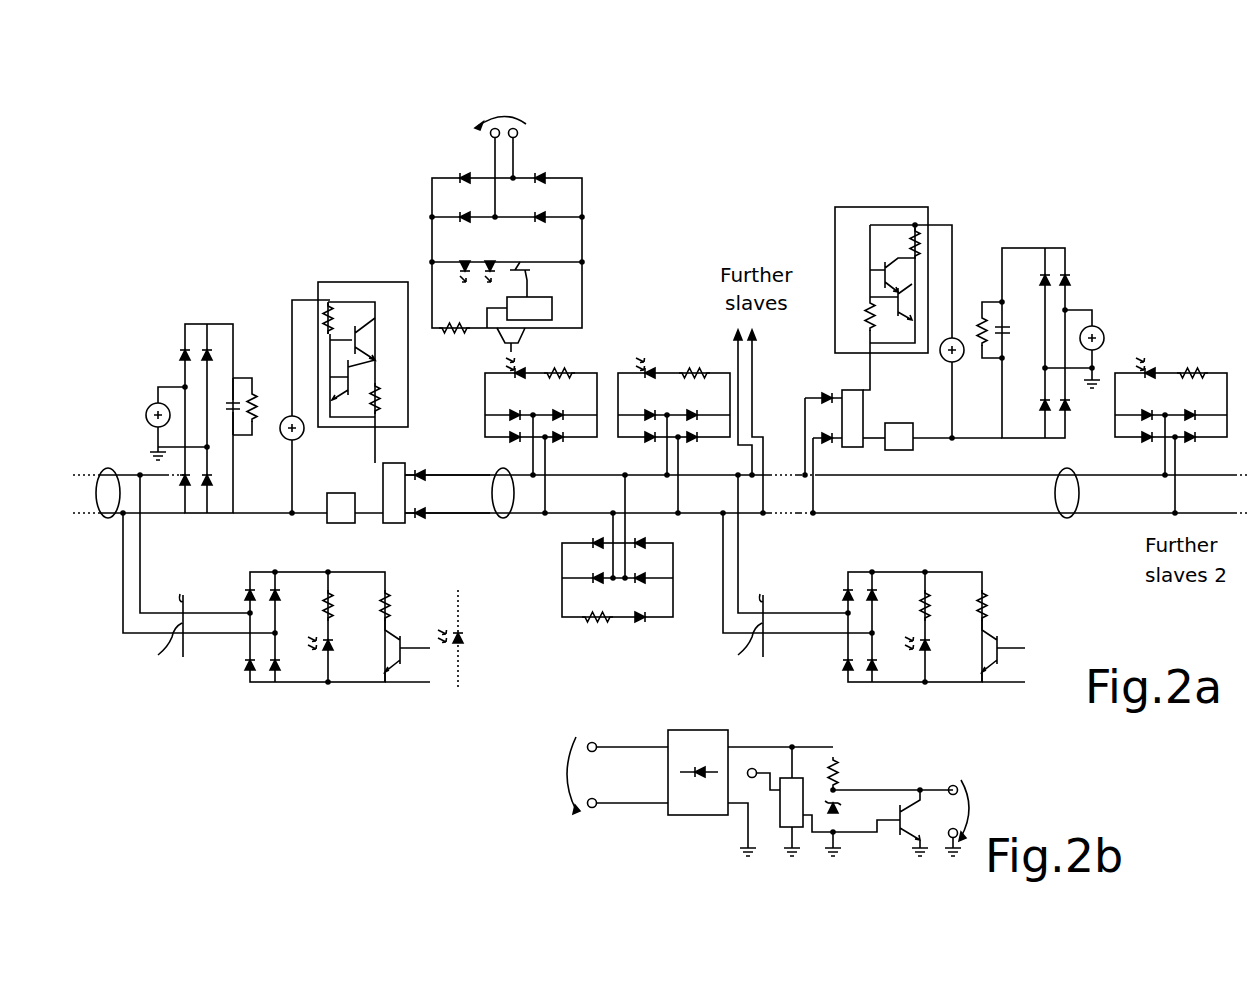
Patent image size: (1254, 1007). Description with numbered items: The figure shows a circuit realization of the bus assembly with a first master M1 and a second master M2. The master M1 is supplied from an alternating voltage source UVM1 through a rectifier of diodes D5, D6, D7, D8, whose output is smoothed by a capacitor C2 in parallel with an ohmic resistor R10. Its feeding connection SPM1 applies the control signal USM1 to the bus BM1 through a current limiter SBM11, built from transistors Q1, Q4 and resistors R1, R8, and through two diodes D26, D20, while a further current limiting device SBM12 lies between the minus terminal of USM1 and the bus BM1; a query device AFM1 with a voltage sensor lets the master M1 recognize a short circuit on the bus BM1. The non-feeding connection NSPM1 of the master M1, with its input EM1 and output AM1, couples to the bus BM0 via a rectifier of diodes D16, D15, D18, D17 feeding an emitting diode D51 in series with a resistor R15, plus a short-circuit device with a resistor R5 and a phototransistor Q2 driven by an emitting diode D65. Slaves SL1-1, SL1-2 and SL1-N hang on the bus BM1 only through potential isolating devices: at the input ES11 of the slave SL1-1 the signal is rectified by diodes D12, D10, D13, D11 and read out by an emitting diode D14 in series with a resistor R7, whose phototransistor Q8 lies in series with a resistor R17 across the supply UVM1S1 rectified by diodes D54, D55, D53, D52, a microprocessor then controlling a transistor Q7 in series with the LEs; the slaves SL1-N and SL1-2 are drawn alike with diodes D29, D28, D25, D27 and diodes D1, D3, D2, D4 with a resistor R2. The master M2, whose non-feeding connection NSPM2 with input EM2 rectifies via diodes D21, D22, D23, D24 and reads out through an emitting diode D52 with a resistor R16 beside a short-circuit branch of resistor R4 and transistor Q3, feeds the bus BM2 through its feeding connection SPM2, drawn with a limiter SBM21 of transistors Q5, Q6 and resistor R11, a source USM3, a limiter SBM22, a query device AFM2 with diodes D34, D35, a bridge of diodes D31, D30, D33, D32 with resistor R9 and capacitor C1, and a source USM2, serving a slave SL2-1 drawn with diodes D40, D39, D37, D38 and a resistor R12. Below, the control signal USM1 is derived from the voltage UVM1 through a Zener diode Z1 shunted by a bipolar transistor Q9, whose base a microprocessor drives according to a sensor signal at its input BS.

In FIG. 2A, the first master M1 is at (234, 381).
In FIG. 2A, the second master M2 is at (989, 319).
In FIG. 2A, the diode D5 is at (176, 350).
In FIG. 2A, the diode D6 is at (215, 350).
In FIG. 2A, the diode D7 is at (176, 484).
In FIG. 2A, the diode D8 is at (215, 484).
In FIG. 2A, the alternating voltage source UVM1 is at (152, 422).
In FIG. 2B, the alternating voltage source UVM1 is at (585, 775).
In FIG. 2A, the capacitor C2 is at (226, 406).
In FIG. 2A, the ohmic resistor R10 is at (258, 406).
In FIG. 2A, the control signal USM1 is at (285, 407).
In FIG. 2B, the control signal USM1 is at (983, 818).
In FIG. 2A, the current limiter SBM11 is at (362, 282).
In FIG. 2A, the ohmic resistor R1 is at (339, 318).
In FIG. 2A, the transistor Q1 is at (368, 339).
In FIG. 2A, the transistor Q4 is at (347, 380).
In FIG. 2A, the ohmic resistor R8 is at (382, 398).
In FIG. 2B, the ohmic resistor R8 is at (889, 806).
In FIG. 2A, the current limiting device SBM12 is at (336, 493).
In FIG. 2A, the query device AFM1 is at (392, 523).
In FIG. 2A, the diode D26 is at (421, 465).
In FIG. 2A, the diode D20 is at (421, 523).
In FIG. 2A, the feeding connection SPM1 is at (447, 494).
In FIG. 2A, the feeding connection SPM2 is at (777, 462).
In FIG. 2A, the bus BM0 is at (108, 518).
In FIG. 2A, the bus BM1 is at (503, 518).
In FIG. 2A, the bus BM2 is at (1067, 518).
In FIG. 2A, the input ES11 is at (535, 338).
In FIG. 2A, the voltage source UVM1S1 is at (492, 155).
In FIG. 2A, the diode D54 is at (463, 170).
In FIG. 2A, the diode D55 is at (540, 170).
In FIG. 2A, the diode D53 is at (463, 209).
In FIG. 2A, the diode D52 is at (741, 433).
In FIG. 2A, the transistor Q7 is at (532, 279).
In FIG. 2A, the ohmic resistor R17 is at (454, 321).
In FIG. 2A, the phototransistor Q8 is at (497, 340).
In FIG. 2A, the slave SL1-1 is at (507, 434).
In FIG. 2A, the emitting diode D14 is at (501, 367).
In FIG. 2A, the resistor R7 is at (559, 366).
In FIG. 2A, the diode D12 is at (514, 407).
In FIG. 2A, the diode D10 is at (557, 407).
In FIG. 2A, the diode D13 is at (574, 527).
In FIG. 2A, the diode D11 is at (559, 448).
In FIG. 2A, the slave SL1-N is at (674, 422).
In FIG. 2A, the diode D29 is at (657, 410).
In FIG. 2A, the diode D28 is at (649, 407).
In FIG. 2A, the diode D25 is at (692, 407).
In FIG. 2A, the diode D27 is at (644, 448).
In FIG. 2A, the slave SL1-2 is at (617, 566).
In FIG. 2A, the diode D1 is at (595, 537).
In FIG. 2A, the diode D3 is at (640, 537).
In FIG. 2A, the diode D2 is at (596, 570).
In FIG. 2A, the diode D4 is at (640, 570).
In FIG. 2A, the resistor R2 is at (597, 610).
In FIG. 2A, the non-feeding connection NSPM1 is at (187, 573).
In FIG. 2A, the non-feeding connection NSPM2 is at (778, 573).
In FIG. 2A, the input EM1 is at (321, 708).
In FIG. 2A, the output AM1 is at (443, 708).
In FIG. 2A, the diode D16 is at (231, 598).
In FIG. 2A, the diode D15 is at (288, 598).
In FIG. 2A, the diode D18 is at (231, 668).
In FIG. 2A, the diode D17 is at (288, 668).
In FIG. 2A, the resistor R15 is at (341, 605).
In FIG. 2A, the emitting diode D51 is at (333, 654).
In FIG. 2A, the resistor R5 is at (627, 460).
In FIG. 2A, the phototransistor Q2 is at (401, 651).
In FIG. 2A, the emitting diode D65 is at (465, 638).
In FIG. 2A, the input EM2 is at (915, 627).
In FIG. 2A, the diode D21 is at (829, 598).
In FIG. 2A, the diode D22 is at (886, 598).
In FIG. 2A, the diode D23 is at (829, 668).
In FIG. 2A, the diode D24 is at (886, 668).
In FIG. 2A, the resistor R16 is at (938, 605).
In FIG. 2A, the ohmic resistor R4 is at (991, 605).
In FIG. 2A, the transistor Q3 is at (996, 651).
In FIG. 2A, the master signal block SBM21 is at (887, 207).
In FIG. 2A, the resistor R11 is at (898, 243).
In FIG. 2A, the transistor Q5 is at (883, 275).
In FIG. 2A, the transistor Q6 is at (907, 302).
In FIG. 2A, the signal voltage source USM3 is at (930, 331).
In FIG. 2A, the master signal block SBM22 is at (891, 427).
In FIG. 2A, the master filter AFM2 is at (845, 385).
In FIG. 2A, the diode D34 is at (822, 429).
In FIG. 2A, the diode D35 is at (826, 474).
In FIG. 2A, the rectifier diode D31 is at (1027, 283).
In FIG. 2A, the rectifier diode D30 is at (1077, 283).
In FIG. 2A, the rectifier diode D33 is at (1027, 408).
In FIG. 2A, the rectifier diode D32 is at (1077, 408).
In FIG. 2A, the resistor R9 is at (981, 330).
In FIG. 2A, the capacitor C1 is at (1011, 330).
In FIG. 2A, the master signal voltage source USM2 is at (1092, 348).
In FIG. 2A, the slave SL2-1 is at (1171, 423).
In FIG. 2A, the diode D40 is at (1131, 410).
In FIG. 2A, the resistor R12 is at (1192, 366).
In FIG. 2A, the diode D39 is at (1144, 408).
In FIG. 2A, the diode D37 is at (1190, 408).
In FIG. 2A, the diode D38 is at (1192, 448).
In FIG. 2B, the input BS is at (760, 772).
In FIG. 2B, the Zener diode Z1 is at (842, 808).
In FIG. 2B, the bipolar transistor Q9 is at (915, 822).